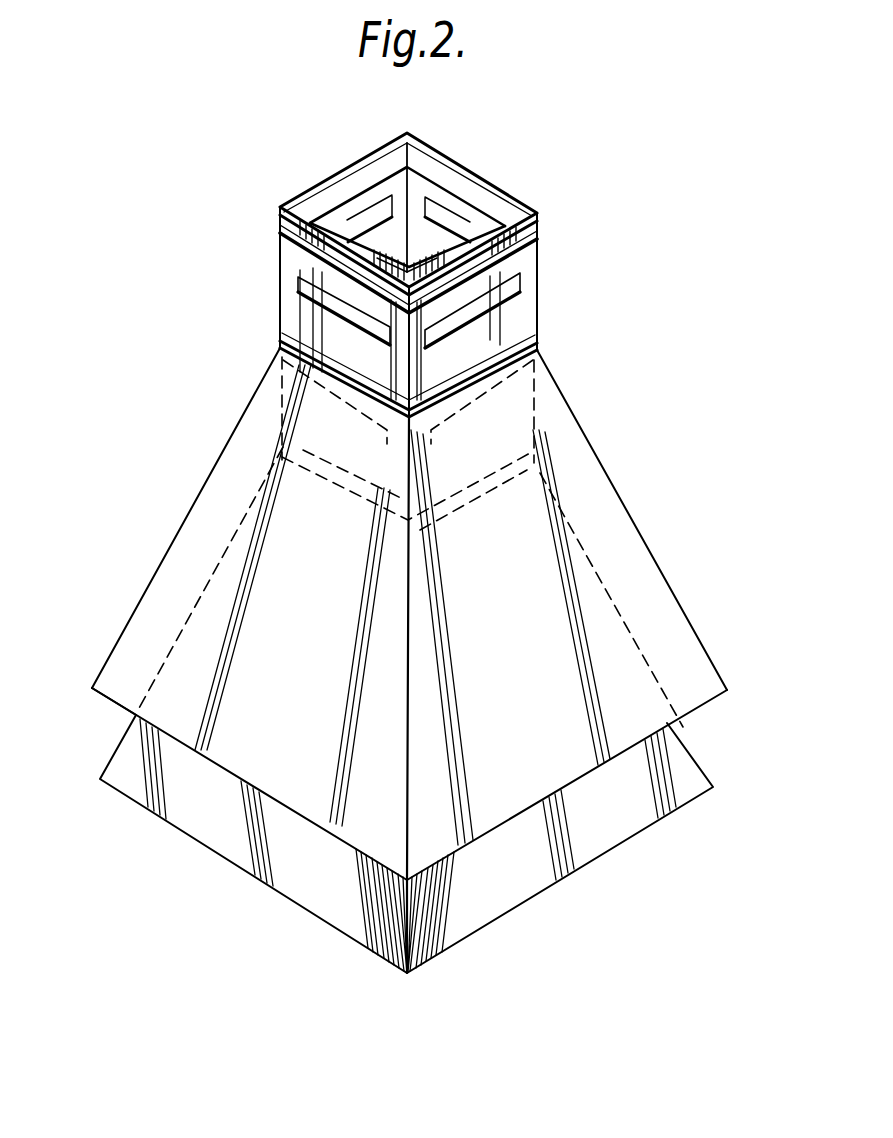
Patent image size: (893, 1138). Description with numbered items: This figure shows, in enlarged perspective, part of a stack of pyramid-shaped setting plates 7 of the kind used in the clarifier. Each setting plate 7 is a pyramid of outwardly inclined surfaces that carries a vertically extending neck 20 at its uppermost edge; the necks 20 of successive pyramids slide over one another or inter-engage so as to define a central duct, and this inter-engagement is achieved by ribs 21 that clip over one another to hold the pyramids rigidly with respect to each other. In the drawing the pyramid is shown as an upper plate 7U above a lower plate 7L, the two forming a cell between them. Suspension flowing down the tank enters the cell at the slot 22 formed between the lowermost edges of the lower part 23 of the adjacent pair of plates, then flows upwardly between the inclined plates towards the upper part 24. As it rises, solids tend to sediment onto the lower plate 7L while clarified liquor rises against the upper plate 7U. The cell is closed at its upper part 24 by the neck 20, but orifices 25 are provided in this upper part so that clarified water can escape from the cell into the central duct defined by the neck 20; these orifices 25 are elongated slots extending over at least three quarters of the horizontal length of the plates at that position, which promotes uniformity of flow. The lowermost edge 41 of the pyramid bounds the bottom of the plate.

The setting plate 7 is at (432, 660).
The upper plate 7U is at (207, 517).
The lower plate 7L is at (303, 860).
The neck 20 is at (532, 266).
The rib 21 is at (472, 202).
The slot 22 is at (136, 714).
The lower part 23 is at (226, 789).
The upper part 24 is at (258, 404).
The orifice 25 is at (345, 303).
The lowermost edge 41 is at (702, 707).